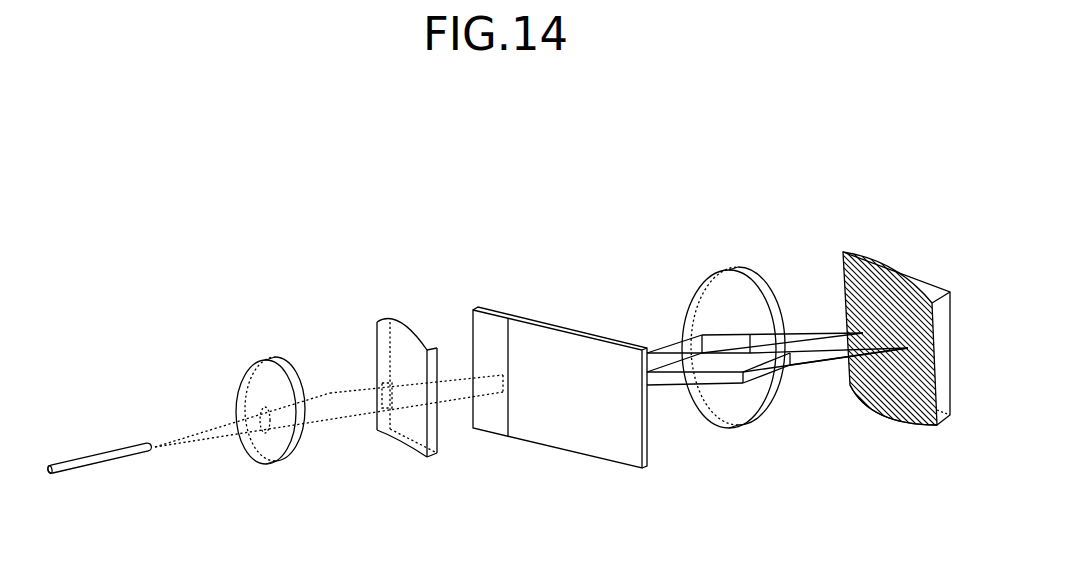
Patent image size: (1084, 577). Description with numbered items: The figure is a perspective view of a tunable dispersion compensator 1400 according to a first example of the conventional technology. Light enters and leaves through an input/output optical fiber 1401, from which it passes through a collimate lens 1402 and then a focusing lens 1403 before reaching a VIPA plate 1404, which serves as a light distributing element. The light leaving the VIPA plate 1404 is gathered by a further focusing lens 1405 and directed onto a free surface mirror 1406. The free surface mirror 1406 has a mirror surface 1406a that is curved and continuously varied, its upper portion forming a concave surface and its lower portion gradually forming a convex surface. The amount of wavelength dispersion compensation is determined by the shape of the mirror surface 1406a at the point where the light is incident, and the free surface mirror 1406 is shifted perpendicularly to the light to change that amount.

The tunable dispersion compensator 1400 is at (534, 143).
The input/output optical fiber 1401 is at (100, 450).
The collimate lens 1402 is at (266, 360).
The focusing lens 1403 is at (387, 322).
The VIPA plate 1404 is at (480, 309).
The focusing lens 1405 is at (720, 271).
The free surface mirror 1406 is at (866, 253).
The mirror surface 1406a is at (892, 411).